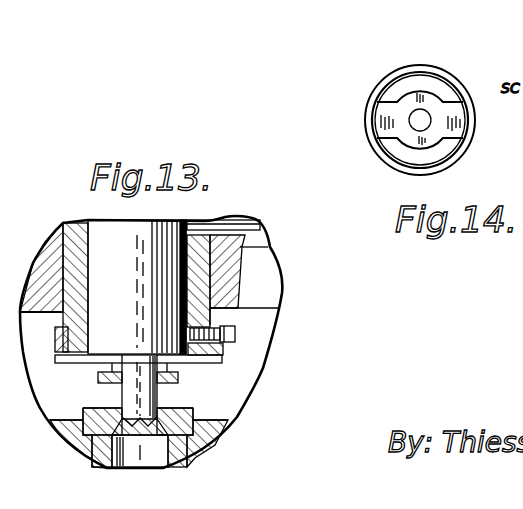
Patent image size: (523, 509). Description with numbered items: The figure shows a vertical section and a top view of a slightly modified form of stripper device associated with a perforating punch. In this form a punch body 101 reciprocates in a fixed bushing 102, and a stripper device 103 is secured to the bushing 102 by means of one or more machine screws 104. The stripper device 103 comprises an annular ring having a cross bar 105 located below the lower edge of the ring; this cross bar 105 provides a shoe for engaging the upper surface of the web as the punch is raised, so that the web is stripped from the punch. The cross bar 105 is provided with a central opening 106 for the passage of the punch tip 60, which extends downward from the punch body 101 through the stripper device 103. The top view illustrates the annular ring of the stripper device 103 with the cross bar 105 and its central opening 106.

In FIG. 13, the spindle shaft 60 is at (157, 400).
In FIG. 13, the cylindrical sleeve 101 is at (172, 290).
In FIG. 13, the cap 102 is at (262, 228).
In FIG. 13, the plate 103 is at (228, 355).
In FIG. 14, the plate 103 is at (370, 93).
In FIG. 13, the screw 104 is at (236, 333).
In FIG. 14, the slot bar 105 is at (447, 113).
In FIG. 14, the central bore 106 is at (414, 116).